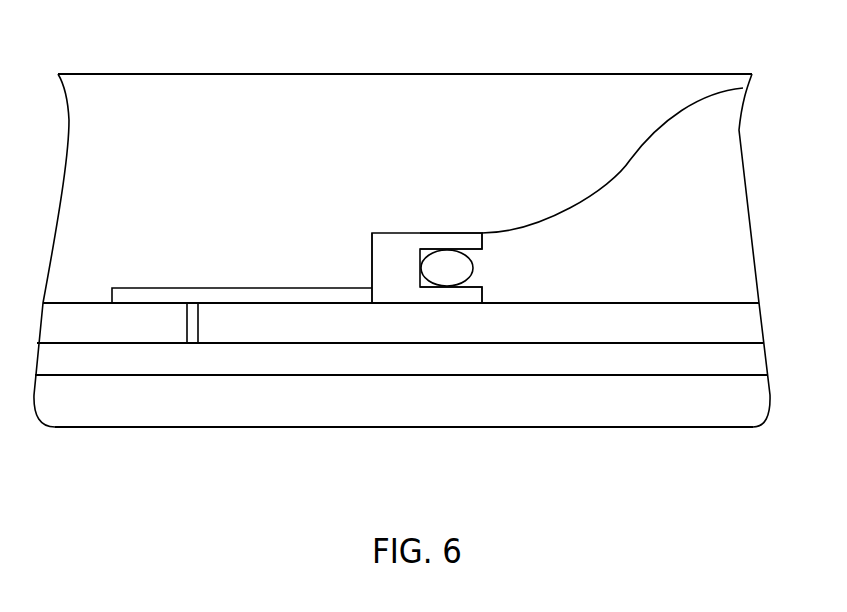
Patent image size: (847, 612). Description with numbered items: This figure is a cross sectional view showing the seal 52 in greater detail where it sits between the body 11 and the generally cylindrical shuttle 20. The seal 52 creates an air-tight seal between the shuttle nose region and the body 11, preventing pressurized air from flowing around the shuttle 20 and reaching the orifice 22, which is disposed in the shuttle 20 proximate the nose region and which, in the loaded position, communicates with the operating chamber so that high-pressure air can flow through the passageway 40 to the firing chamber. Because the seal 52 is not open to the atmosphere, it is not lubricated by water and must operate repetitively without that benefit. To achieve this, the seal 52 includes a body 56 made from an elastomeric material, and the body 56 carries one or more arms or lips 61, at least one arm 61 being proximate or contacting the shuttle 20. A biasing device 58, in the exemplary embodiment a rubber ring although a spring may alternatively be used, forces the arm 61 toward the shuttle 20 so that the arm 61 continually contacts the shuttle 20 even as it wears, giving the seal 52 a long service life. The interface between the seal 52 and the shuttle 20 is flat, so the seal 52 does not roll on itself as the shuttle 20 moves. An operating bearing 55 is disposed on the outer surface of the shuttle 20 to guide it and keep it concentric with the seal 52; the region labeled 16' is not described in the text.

The body 11 is at (685, 74).
The recess region 16' is at (652, 250).
The seal 52 is at (390, 233).
The arm 61 is at (465, 233).
The body 56 is at (372, 268).
The biasing device 58 is at (478, 273).
The operating bearing 55 is at (182, 288).
The orifice 22 is at (198, 318).
The passageway 40 is at (335, 377).
The shuttle 20 is at (572, 343).